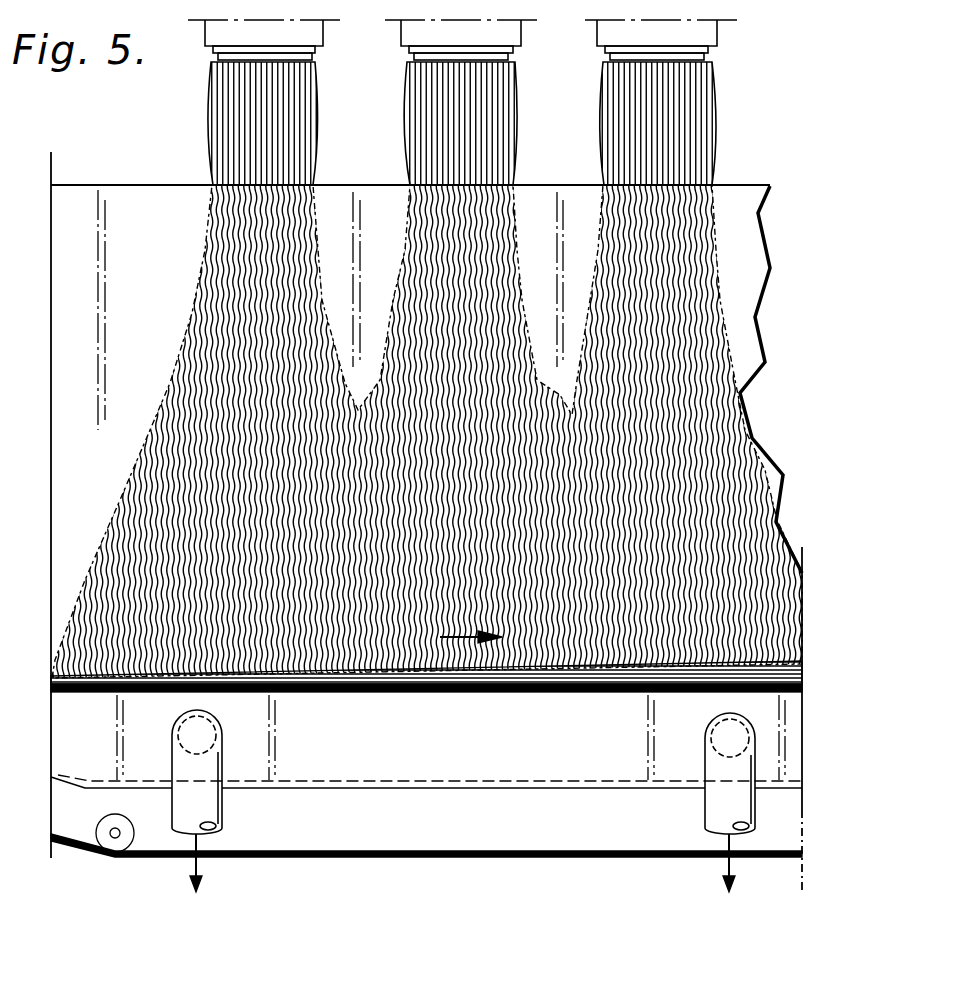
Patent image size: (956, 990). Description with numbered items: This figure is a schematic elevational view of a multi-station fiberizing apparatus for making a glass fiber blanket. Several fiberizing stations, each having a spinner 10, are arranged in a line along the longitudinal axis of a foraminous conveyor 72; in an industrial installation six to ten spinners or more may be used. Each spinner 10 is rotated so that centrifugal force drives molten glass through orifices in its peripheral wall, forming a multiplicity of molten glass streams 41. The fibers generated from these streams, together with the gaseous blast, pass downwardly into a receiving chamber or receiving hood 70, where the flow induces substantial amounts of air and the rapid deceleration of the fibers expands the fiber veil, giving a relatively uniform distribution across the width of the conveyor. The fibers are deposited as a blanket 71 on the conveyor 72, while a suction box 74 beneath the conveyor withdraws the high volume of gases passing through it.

The spinner 10 is at (415, 57).
The molten glass streams 41 is at (406, 97).
The receiving chamber or receiving hood 70 is at (748, 225).
The blanket 71 is at (800, 680).
The foraminous conveyor 72 is at (518, 693).
The suction box 74 is at (790, 722).